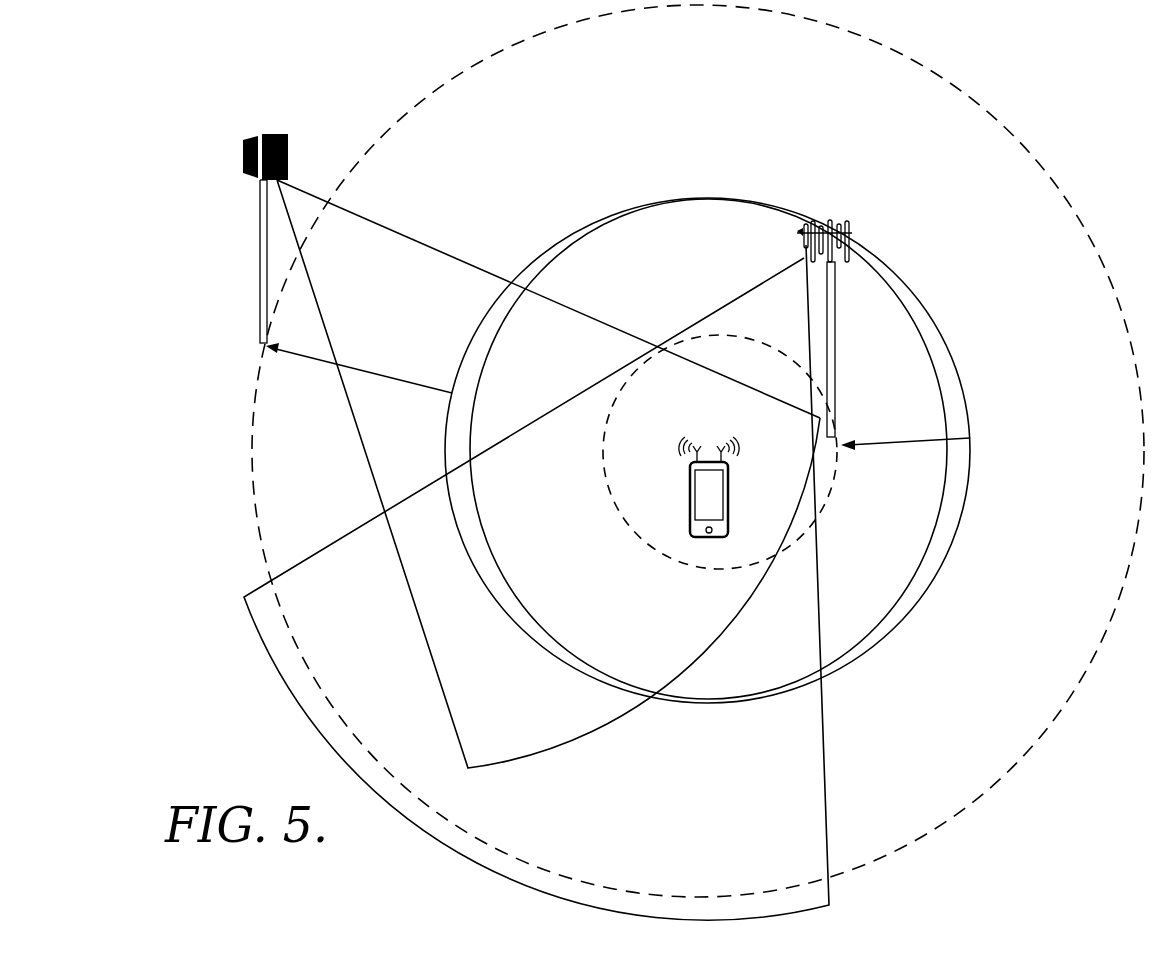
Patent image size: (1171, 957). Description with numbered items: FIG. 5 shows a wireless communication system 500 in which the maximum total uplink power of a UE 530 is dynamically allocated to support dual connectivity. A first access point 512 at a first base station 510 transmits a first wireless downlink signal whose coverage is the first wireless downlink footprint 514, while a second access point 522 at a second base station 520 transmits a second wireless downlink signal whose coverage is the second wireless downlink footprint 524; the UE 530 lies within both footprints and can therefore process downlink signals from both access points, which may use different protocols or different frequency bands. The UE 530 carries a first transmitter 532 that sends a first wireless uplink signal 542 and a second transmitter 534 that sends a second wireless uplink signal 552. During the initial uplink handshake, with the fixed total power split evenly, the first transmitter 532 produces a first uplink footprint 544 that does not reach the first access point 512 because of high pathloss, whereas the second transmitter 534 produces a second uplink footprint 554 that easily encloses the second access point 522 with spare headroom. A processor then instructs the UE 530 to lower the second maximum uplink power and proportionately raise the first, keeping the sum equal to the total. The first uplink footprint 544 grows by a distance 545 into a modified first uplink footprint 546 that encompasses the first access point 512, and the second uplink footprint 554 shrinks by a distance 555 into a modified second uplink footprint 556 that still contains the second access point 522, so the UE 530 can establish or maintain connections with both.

The wireless communication system 500 is at (112, 60).
The first base station 510 is at (258, 224).
The first access point 512 is at (277, 135).
The first wireless downlink footprint 514 is at (371, 276).
The second base station 520 is at (881, 312).
The second access point 522 is at (838, 222).
The second wireless downlink footprint 524 is at (792, 327).
The UE 530 is at (707, 485).
The first transmitter 532 is at (692, 460).
The second transmitter 534 is at (726, 460).
The first wireless uplink signal 542 is at (684, 440).
The first uplink footprint 544 is at (558, 245).
The distance 545 is at (347, 367).
The modified first uplink footprint 546 is at (470, 68).
The second wireless uplink signal 552 is at (732, 440).
The second uplink footprint 554 is at (960, 362).
The distance 555 is at (968, 448).
The modified second uplink footprint 556 is at (840, 472).